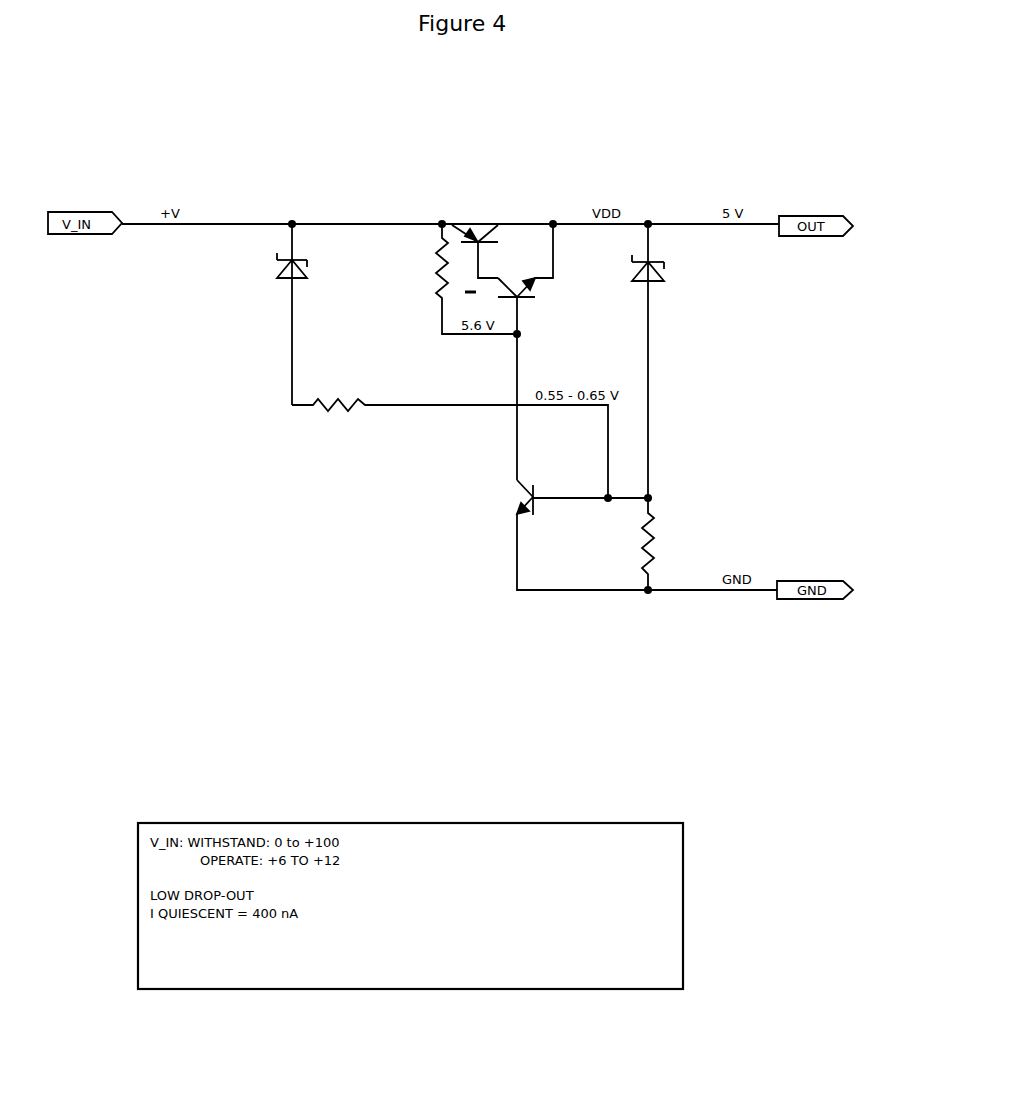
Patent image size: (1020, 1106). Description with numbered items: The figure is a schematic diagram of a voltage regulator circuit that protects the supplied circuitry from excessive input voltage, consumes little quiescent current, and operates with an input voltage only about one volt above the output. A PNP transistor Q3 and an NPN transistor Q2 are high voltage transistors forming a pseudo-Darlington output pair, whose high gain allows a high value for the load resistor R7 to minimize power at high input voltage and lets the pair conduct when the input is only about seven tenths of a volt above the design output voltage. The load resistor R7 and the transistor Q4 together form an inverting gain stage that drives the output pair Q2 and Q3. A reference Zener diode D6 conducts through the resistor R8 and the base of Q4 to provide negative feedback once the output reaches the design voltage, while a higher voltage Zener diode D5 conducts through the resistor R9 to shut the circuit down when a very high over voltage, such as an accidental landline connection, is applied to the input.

The higher voltage Zener diode D5 is at (333, 314).
The load resistor R7 is at (456, 279).
The PNP transistor Q3 is at (473, 235).
The NPN transistor Q2 is at (552, 279).
The reference Zener diode D6 is at (698, 361).
The resistor R9 is at (450, 441).
The transistor Q4 is at (582, 462).
The resistor R8 is at (660, 544).